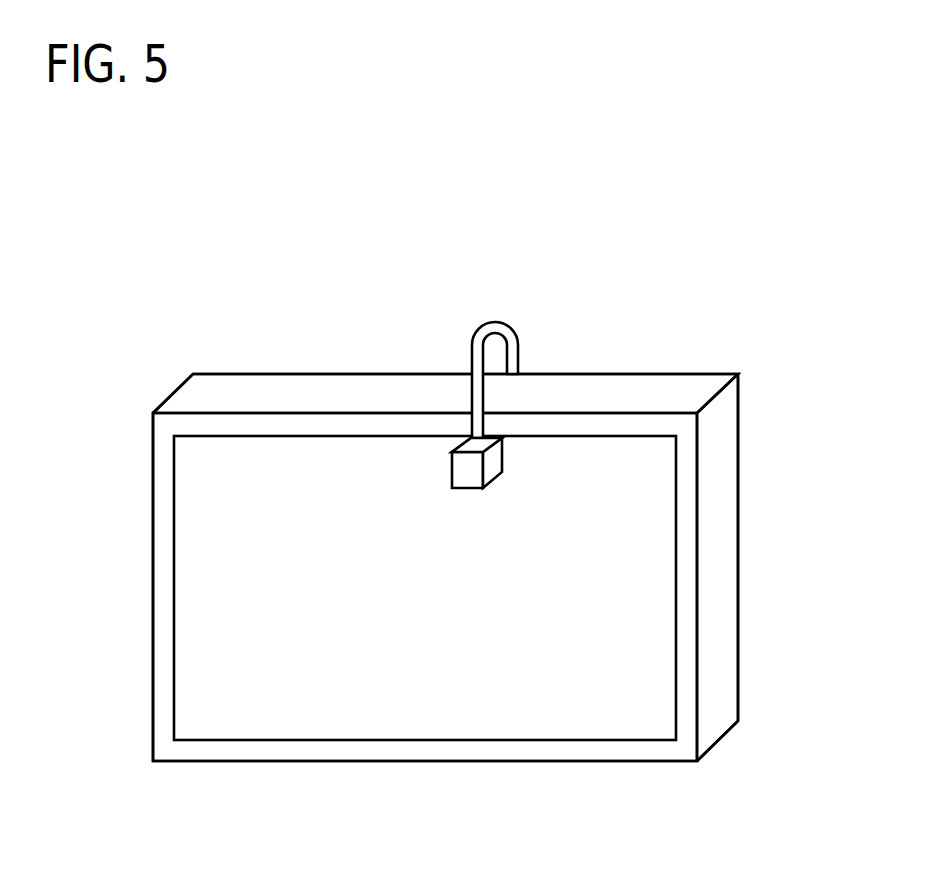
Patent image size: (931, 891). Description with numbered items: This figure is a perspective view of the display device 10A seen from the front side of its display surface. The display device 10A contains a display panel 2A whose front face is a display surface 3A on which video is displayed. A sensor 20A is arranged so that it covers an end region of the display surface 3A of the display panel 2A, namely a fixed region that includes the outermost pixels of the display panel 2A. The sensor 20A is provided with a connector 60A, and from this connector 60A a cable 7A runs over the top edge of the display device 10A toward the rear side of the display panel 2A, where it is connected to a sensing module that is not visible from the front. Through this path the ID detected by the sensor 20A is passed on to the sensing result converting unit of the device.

The display device 10A is at (738, 270).
The display panel 2A is at (708, 387).
The display surface 3A is at (438, 593).
The cable 7A is at (477, 338).
The connector 60A is at (482, 441).
The sensor 20A is at (493, 463).